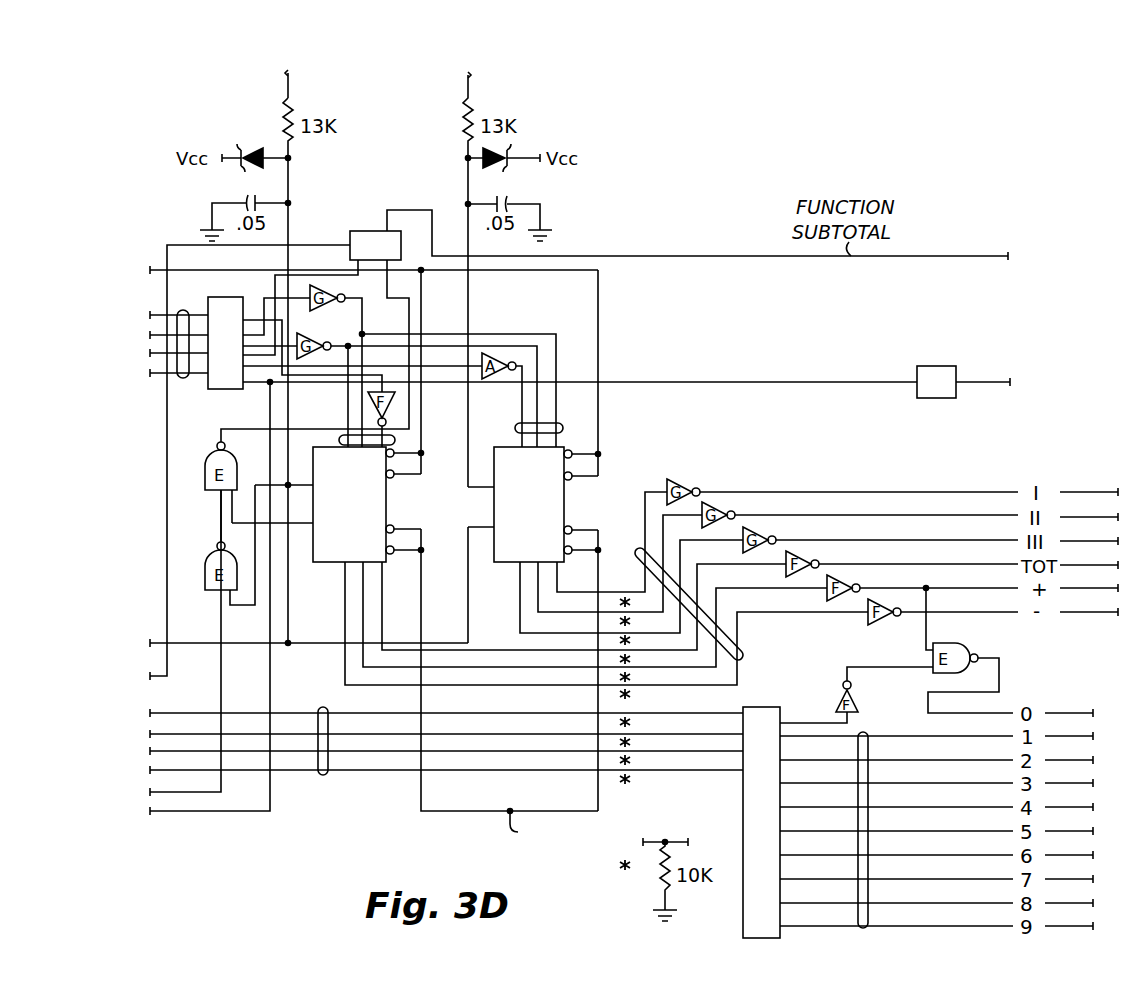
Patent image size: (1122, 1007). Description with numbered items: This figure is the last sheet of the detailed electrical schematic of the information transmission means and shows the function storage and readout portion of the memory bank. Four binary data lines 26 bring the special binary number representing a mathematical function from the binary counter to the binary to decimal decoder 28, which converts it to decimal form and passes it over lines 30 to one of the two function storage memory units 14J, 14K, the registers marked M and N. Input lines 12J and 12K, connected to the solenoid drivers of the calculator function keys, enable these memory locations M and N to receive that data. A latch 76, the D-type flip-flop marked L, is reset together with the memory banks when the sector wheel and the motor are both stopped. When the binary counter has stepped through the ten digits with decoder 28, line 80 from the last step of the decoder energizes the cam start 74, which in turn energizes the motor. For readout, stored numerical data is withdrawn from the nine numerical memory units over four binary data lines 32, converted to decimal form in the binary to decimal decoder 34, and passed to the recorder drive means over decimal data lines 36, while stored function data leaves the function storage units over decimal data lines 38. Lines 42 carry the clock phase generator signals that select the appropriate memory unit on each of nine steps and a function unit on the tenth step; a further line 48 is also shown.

The input line 12J is at (290, 92).
The input line 12K is at (470, 92).
The latch 76 is at (366, 230).
The binary data lines 26 is at (178, 312).
The binary to decimal decoder 28 is at (231, 389).
The lines 30 is at (395, 440).
The function storage memory unit 14J is at (386, 513).
The function storage memory unit 14K is at (565, 513).
The line 80 is at (791, 383).
The cam start 74 is at (955, 366).
The reset line 48 is at (331, 643).
The decimal data lines 38 is at (740, 656).
The binary data lines 32 is at (323, 775).
The lines 42 is at (531, 831).
The binary to decimal decoder 34 is at (743, 820).
The decimal data lines 36 is at (863, 928).